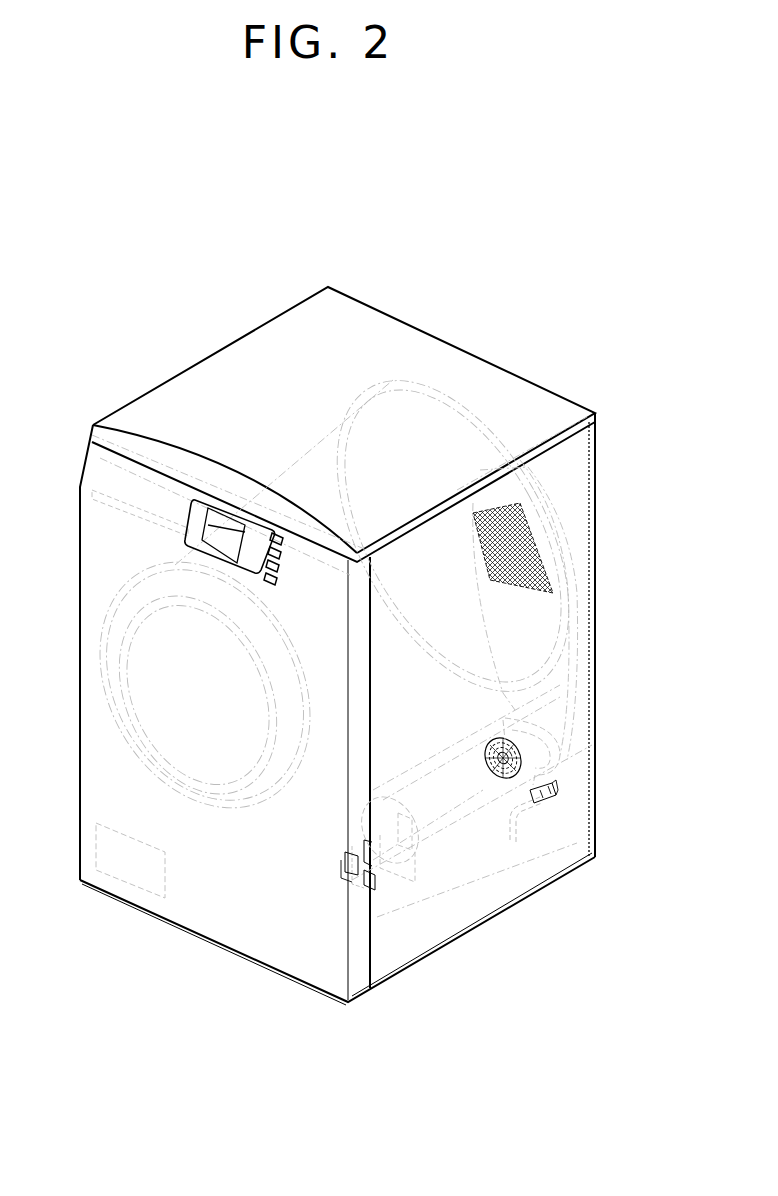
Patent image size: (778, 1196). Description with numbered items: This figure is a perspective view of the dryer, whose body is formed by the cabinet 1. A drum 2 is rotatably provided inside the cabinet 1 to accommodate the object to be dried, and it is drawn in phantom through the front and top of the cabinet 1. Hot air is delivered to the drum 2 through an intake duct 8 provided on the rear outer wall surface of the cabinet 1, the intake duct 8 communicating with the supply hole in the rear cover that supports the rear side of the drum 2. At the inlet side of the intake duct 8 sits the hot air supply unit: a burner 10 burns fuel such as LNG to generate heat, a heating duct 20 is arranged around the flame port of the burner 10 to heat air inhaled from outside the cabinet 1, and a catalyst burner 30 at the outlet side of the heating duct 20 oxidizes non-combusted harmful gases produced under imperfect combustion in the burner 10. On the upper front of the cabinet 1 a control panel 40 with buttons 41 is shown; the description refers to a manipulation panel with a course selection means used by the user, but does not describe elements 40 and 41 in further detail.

The cabinet 1 is at (446, 337).
The drum 2 is at (273, 443).
The intake duct 8 is at (553, 500).
The burner 10 is at (392, 838).
The heating duct 20 is at (463, 807).
The catalyst burner 30 is at (530, 758).
The control panel 40 is at (215, 542).
The buttons 41 is at (273, 522).